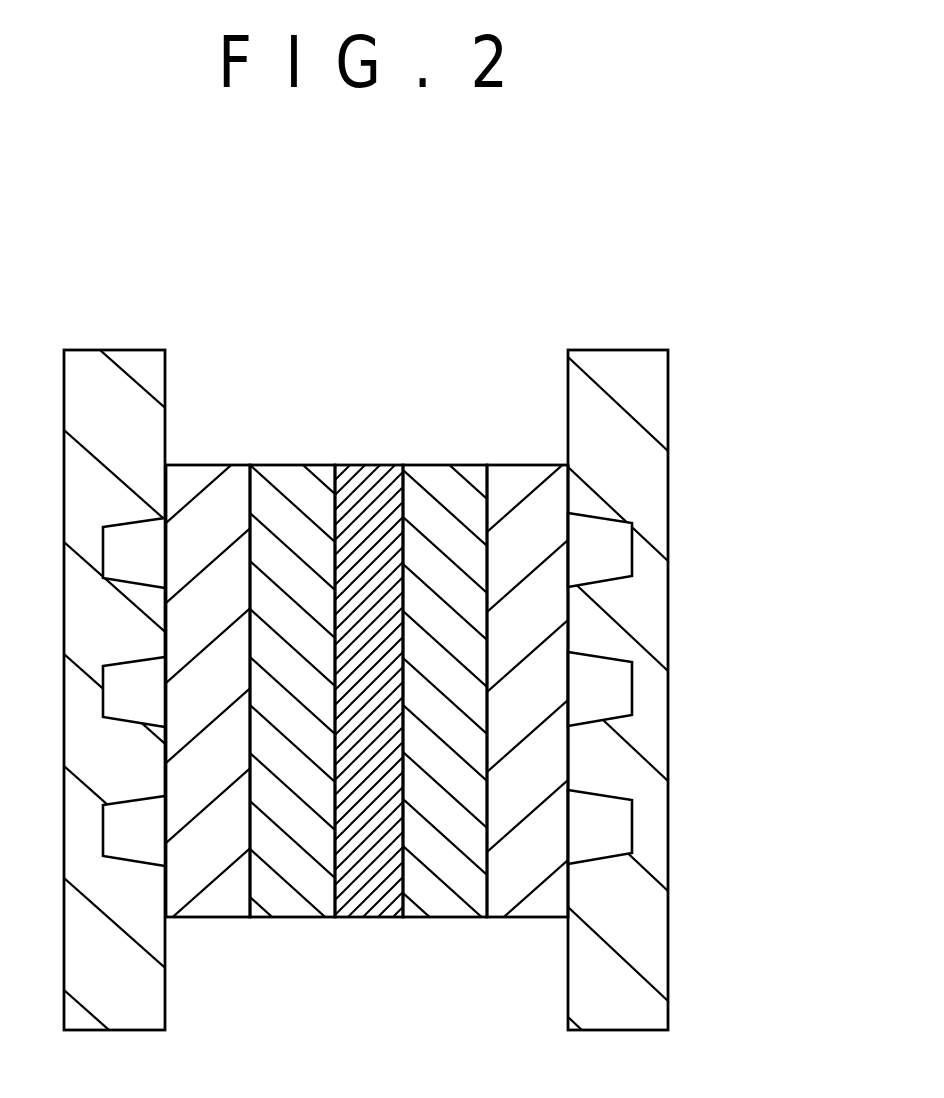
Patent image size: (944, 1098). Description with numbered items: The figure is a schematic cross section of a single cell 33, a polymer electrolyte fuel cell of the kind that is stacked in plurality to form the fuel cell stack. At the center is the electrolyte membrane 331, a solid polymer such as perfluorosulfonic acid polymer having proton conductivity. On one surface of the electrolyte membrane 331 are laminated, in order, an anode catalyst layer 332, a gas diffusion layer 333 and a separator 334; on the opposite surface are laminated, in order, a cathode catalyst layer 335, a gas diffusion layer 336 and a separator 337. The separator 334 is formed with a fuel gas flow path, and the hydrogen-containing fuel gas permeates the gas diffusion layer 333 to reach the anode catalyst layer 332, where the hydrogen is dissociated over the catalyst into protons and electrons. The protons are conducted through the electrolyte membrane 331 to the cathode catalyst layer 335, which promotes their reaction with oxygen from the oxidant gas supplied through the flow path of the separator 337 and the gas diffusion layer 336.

The cell 33 is at (761, 268).
The electrolyte membrane 331 is at (371, 478).
The anode catalyst layer 332 is at (453, 483).
The gas diffusion layer 333 is at (535, 485).
The separator 334 is at (623, 368).
The cathode catalyst layer 335 is at (298, 480).
The gas diffusion layer 336 is at (217, 478).
The separator 337 is at (123, 368).